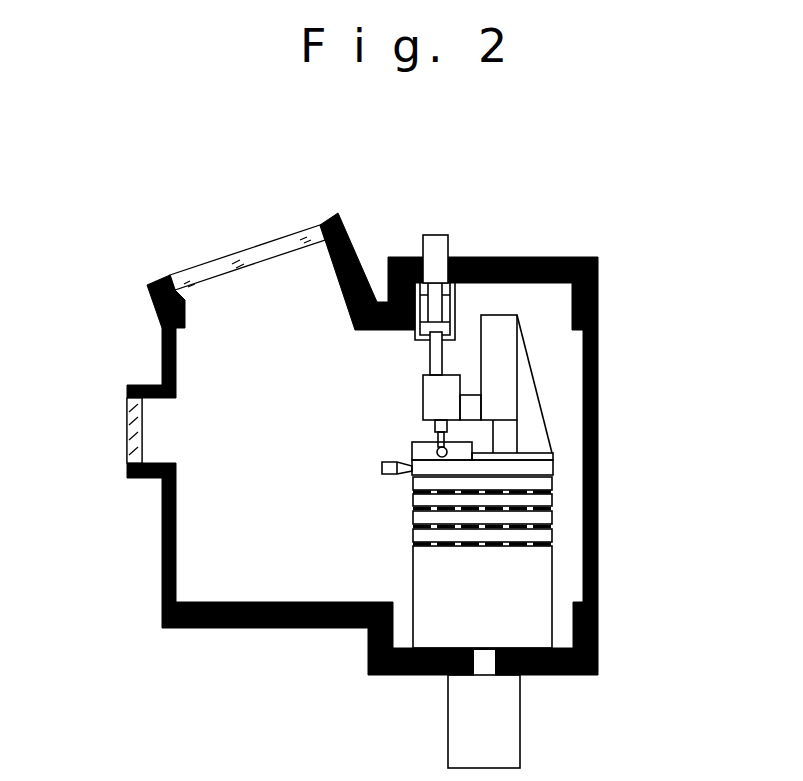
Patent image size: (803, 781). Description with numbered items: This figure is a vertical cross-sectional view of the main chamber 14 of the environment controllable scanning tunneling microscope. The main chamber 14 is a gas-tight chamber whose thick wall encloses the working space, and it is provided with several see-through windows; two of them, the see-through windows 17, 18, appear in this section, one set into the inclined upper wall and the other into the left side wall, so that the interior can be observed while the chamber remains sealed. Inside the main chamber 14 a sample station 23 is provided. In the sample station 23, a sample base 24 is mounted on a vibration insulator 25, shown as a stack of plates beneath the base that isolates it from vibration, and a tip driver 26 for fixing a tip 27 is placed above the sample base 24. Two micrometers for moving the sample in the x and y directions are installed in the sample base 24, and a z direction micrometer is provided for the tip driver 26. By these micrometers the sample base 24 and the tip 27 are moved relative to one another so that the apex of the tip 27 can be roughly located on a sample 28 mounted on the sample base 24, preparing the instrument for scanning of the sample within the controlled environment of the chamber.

The main chamber 14 is at (320, 281).
The see-through window 17 is at (219, 260).
The see-through window 18 is at (132, 435).
The sample station 23 is at (523, 390).
The sample base 24 is at (460, 450).
The vibration insulator 25 is at (540, 518).
The tip driver 26 is at (423, 390).
The tip 27 is at (436, 427).
The sample 28 is at (437, 440).